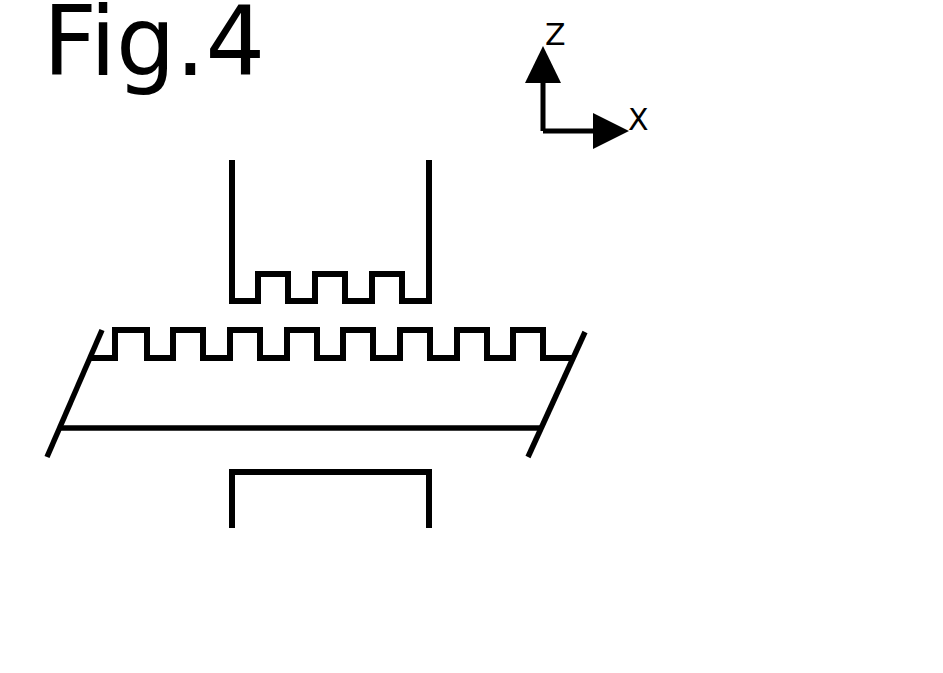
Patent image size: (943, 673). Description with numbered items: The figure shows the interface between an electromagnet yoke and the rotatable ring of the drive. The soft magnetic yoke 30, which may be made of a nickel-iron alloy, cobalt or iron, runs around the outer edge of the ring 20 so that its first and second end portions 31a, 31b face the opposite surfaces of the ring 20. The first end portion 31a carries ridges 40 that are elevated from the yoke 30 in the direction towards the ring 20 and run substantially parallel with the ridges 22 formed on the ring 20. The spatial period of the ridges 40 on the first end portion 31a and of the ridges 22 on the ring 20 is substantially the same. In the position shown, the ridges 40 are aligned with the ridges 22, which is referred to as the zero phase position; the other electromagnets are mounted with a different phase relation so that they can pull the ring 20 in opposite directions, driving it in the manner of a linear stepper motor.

The ring 20 is at (355, 351).
The ridges 22 is at (472, 327).
The soft magnetic yoke 30 is at (271, 344).
The first end portion of yoke 31a is at (271, 230).
The second end portion of yoke 31b is at (227, 490).
The ridges of yoke 40 is at (243, 300).